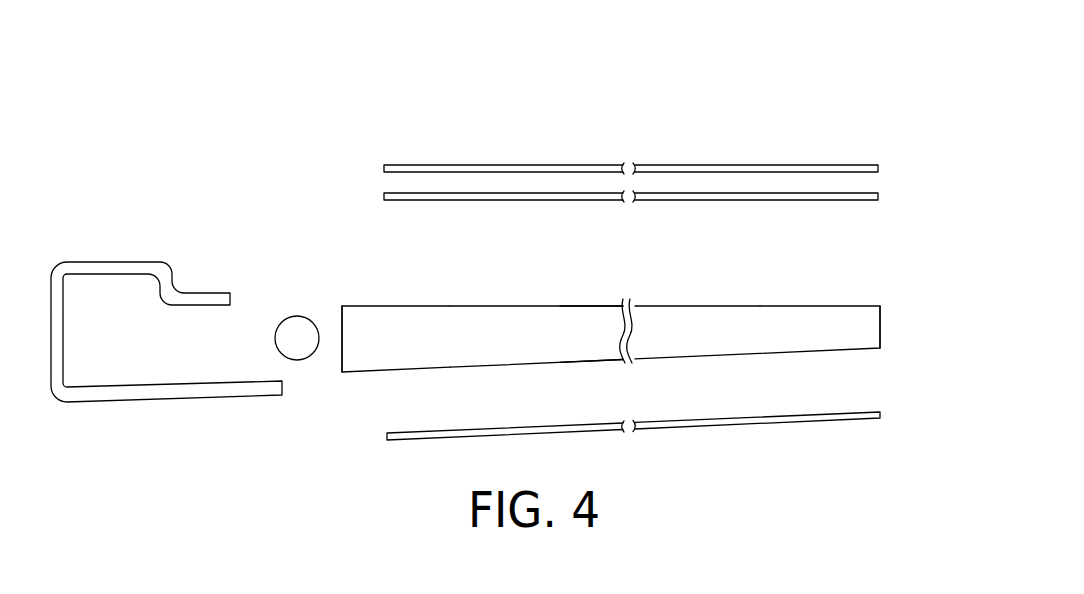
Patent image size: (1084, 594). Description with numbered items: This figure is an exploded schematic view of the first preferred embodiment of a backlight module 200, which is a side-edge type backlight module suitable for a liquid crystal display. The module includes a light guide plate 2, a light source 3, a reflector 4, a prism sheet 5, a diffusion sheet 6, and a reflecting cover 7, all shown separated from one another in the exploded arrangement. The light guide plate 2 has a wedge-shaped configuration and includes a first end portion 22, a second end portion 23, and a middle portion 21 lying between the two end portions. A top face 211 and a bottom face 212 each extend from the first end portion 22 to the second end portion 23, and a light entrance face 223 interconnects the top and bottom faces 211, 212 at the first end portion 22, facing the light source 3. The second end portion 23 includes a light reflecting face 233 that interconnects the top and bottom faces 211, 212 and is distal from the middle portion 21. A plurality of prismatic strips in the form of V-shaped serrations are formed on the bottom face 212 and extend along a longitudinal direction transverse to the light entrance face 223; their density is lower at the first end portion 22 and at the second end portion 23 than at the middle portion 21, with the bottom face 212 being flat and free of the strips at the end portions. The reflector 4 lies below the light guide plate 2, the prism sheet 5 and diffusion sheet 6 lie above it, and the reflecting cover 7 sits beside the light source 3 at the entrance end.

The light guide plate 2 is at (616, 311).
The middle portion 21 is at (592, 273).
The first end portion 22 is at (377, 276).
The second end portion 23 is at (825, 280).
The top face 211 is at (608, 305).
The bottom face 212 is at (608, 362).
The light entrance face 223 is at (342, 347).
The light reflecting face 233 is at (880, 335).
The light source 3 is at (297, 337).
The reflector 4 is at (793, 420).
The prism sheet 5 is at (397, 196).
The diffusion sheet 6 is at (397, 167).
The reflecting cover 7 is at (135, 262).
The backlight module 200 is at (650, 136).